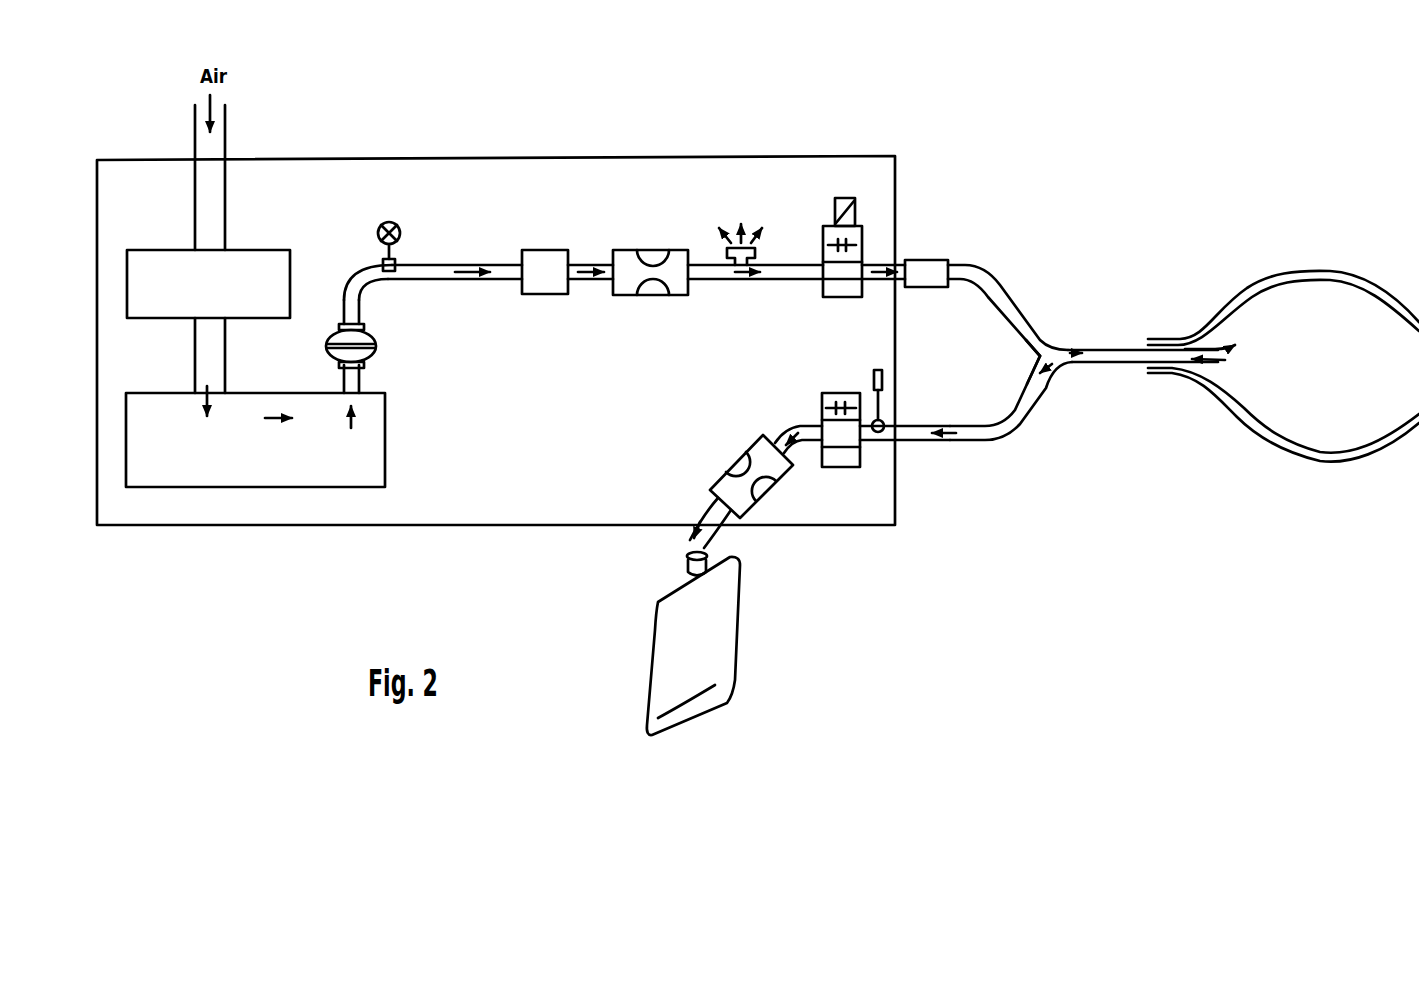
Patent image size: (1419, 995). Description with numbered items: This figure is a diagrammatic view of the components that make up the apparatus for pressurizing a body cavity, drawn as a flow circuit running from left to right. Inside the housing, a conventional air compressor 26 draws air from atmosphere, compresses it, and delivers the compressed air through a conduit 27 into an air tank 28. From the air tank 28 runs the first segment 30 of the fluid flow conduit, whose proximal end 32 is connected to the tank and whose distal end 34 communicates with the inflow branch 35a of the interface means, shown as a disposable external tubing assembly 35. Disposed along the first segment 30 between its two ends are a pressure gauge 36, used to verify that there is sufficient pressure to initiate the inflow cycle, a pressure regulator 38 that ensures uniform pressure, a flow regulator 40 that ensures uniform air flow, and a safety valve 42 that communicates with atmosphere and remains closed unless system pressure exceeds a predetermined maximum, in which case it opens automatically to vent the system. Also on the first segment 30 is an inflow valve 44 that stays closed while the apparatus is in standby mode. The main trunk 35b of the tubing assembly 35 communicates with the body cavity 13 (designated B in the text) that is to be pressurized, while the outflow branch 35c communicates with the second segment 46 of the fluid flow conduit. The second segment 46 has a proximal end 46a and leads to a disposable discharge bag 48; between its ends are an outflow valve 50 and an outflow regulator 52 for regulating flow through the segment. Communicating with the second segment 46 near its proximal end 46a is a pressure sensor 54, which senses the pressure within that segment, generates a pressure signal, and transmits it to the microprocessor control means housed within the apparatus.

The body cavity 13 is at (1283, 318).
The air compressor 26 is at (243, 262).
The conduit 27 is at (225, 358).
The air tank 28 is at (365, 455).
The first segment 30 is at (423, 263).
The proximal end 32 is at (361, 387).
The distal end 34 is at (951, 263).
The external tubing assembly 35 is at (1081, 330).
The inflow branch 35a is at (1004, 296).
The main trunk 35b is at (1108, 366).
The outflow branch 35c is at (1012, 416).
The pressure gauge 36 is at (392, 222).
The pressure regulator 38 is at (547, 249).
The flow regulator 40 is at (623, 249).
The safety valve 42 is at (752, 246).
The inflow valve 44 is at (847, 199).
The second segment 46 is at (805, 378).
The proximal end 46a is at (903, 420).
The discharge bag 48 is at (663, 677).
The outflow valve 50 is at (850, 468).
The outflow regulator 52 is at (728, 468).
The pressure sensor 54 is at (883, 368).